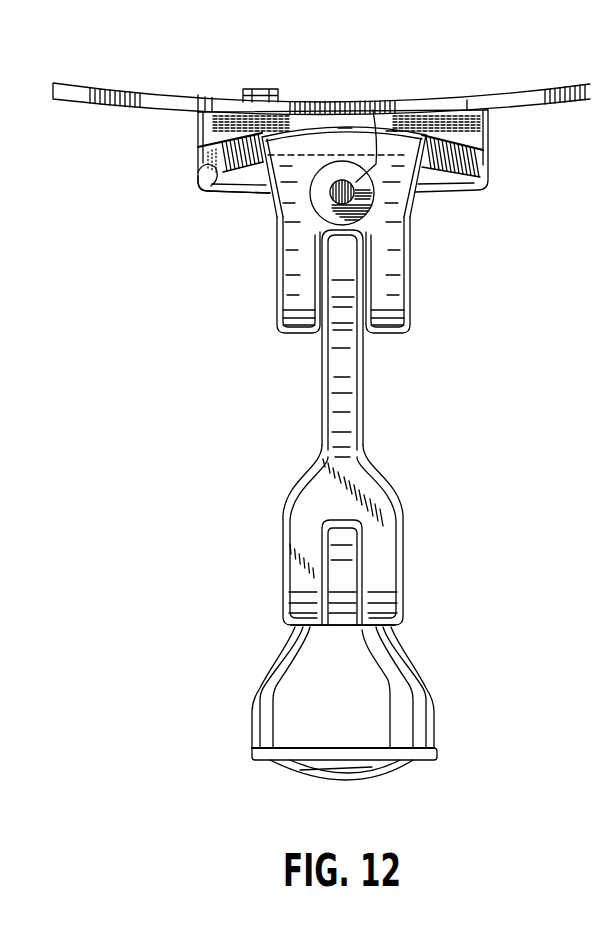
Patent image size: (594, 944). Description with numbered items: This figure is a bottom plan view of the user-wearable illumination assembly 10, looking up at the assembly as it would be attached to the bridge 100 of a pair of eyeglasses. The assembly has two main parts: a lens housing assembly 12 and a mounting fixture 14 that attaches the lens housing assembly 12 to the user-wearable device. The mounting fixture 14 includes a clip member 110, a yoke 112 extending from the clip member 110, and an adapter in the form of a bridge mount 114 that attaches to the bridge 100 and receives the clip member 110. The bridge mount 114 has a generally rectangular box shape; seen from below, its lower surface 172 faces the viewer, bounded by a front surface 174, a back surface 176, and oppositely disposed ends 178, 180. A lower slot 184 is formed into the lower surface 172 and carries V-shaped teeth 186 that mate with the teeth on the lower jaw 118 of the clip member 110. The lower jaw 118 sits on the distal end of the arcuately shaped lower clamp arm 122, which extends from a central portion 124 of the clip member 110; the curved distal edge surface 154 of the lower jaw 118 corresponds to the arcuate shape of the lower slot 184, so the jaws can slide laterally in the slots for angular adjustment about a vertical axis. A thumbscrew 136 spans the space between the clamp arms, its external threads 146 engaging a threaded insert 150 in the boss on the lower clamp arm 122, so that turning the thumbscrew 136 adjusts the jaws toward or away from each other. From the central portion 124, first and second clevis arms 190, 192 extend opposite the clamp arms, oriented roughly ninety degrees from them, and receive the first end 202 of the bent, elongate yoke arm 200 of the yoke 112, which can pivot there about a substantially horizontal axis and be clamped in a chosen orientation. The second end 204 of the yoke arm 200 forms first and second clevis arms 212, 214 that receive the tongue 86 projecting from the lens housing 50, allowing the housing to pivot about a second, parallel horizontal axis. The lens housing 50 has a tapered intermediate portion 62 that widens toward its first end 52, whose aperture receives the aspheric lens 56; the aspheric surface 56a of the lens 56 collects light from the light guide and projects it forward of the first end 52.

The illumination assembly 10 is at (170, 430).
The lens housing assembly 12 is at (436, 716).
The mounting fixture 14 is at (447, 403).
The lens housing 50 is at (356, 707).
The first end 52 is at (262, 762).
The lens 56 is at (375, 781).
The aspheric surface 56a is at (344, 776).
The intermediate portion 62 is at (290, 640).
The tongue 86 is at (338, 555).
The bridge 100 is at (557, 87).
The clip member 110 is at (278, 329).
The yoke 112 is at (366, 415).
The bridge mount 114 is at (204, 181).
The lower jaw 118 is at (394, 130).
The lower clamp arm 122 is at (298, 147).
The central portion 124 is at (411, 210).
The thumbscrew 136 is at (328, 197).
The external threads 146 is at (373, 110).
The threaded insert 150 is at (319, 166).
The distal edge surface 154 is at (345, 125).
The lower surface 172 is at (208, 108).
The front surface 174 is at (227, 193).
The back surface 176 is at (467, 112).
The end 178 is at (490, 125).
The end 180 is at (196, 124).
The lower slot 184 is at (198, 162).
The V-shaped teeth 186 is at (487, 160).
The first clevis arm 190 is at (397, 287).
The second clevis arm 192 is at (290, 294).
The yoke arm 200 is at (332, 396).
The first end 202 is at (350, 314).
The second end 204 is at (397, 632).
The first clevis arm 212 is at (389, 573).
The second clevis arm 214 is at (296, 585).